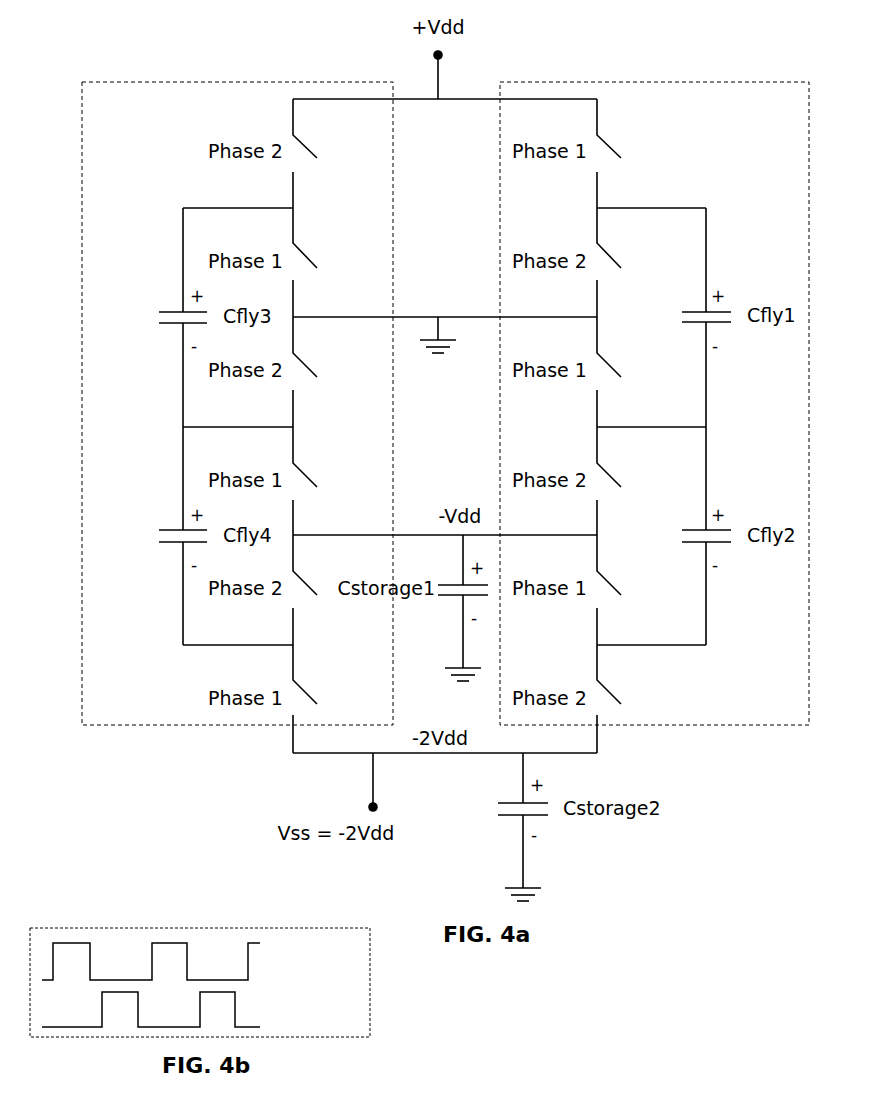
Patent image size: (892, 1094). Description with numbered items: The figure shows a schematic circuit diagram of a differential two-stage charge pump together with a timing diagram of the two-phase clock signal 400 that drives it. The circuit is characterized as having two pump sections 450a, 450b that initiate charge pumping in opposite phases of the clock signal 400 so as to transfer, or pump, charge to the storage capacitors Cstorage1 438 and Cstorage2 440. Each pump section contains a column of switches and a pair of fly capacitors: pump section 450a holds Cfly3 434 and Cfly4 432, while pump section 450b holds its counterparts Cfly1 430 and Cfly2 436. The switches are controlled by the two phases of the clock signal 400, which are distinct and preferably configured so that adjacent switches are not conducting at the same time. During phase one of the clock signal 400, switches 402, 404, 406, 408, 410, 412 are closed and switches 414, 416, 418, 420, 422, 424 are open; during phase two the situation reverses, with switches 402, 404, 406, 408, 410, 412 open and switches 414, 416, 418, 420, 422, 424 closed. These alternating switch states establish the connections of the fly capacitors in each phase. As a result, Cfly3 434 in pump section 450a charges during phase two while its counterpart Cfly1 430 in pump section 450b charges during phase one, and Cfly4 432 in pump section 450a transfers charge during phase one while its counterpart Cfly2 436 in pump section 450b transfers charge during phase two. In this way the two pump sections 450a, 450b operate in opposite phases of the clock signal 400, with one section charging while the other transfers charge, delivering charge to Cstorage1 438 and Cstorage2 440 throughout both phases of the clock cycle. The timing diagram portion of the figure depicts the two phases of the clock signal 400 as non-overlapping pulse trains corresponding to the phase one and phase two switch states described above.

In FIG. 4B, the two-phase clock signal 400 is at (172, 928).
In FIG. 4A, the switch 402 is at (619, 157).
In FIG. 4A, the switch 404 is at (619, 376).
In FIG. 4A, the switch 406 is at (619, 594).
In FIG. 4A, the switch 408 is at (315, 267).
In FIG. 4A, the switch 410 is at (315, 486).
In FIG. 4A, the switch 412 is at (315, 703).
In FIG. 4A, the switch 414 is at (315, 157).
In FIG. 4A, the switch 416 is at (315, 376).
In FIG. 4A, the switch 418 is at (313, 594).
In FIG. 4A, the switch 420 is at (619, 267).
In FIG. 4A, the switch 422 is at (619, 486).
In FIG. 4A, the switch 424 is at (619, 703).
In FIG. 4A, the fly capacitor Cfly1 430 is at (725, 310).
In FIG. 4A, the fly capacitor Cfly4 432 is at (168, 528).
In FIG. 4A, the fly capacitor Cfly3 434 is at (168, 310).
In FIG. 4A, the fly capacitor Cfly2 436 is at (725, 528).
In FIG. 4A, the storage capacitor Cstorage1 438 is at (478, 598).
In FIG. 4A, the storage capacitor Cstorage2 440 is at (510, 817).
In FIG. 4A, the pump section 450a is at (195, 82).
In FIG. 4A, the pump section 450b is at (635, 82).